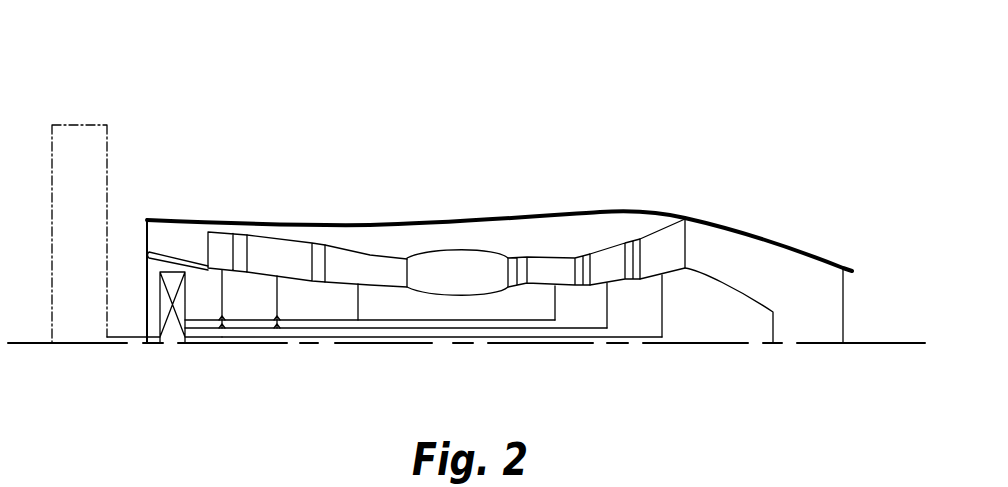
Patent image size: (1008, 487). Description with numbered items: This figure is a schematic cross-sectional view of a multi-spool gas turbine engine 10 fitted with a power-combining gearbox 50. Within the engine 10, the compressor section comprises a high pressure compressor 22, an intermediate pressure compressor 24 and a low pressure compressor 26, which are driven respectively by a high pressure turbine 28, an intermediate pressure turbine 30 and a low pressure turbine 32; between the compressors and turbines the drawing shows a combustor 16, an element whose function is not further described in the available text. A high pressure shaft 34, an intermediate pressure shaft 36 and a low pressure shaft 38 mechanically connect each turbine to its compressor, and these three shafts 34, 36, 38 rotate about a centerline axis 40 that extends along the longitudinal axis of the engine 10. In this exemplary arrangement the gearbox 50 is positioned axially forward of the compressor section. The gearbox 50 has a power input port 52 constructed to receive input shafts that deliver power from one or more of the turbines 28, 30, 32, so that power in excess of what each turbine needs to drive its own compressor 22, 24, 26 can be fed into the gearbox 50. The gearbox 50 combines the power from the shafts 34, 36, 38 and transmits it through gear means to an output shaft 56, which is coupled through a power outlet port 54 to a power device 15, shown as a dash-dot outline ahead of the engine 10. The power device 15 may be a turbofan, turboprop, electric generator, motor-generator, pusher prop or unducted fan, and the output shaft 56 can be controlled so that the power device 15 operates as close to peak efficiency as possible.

The gas turbine engine 10 is at (453, 152).
The power device 15 is at (80, 156).
The combustor 16 is at (450, 265).
The high pressure compressor 22 is at (367, 263).
The intermediate pressure compressor 24 is at (282, 252).
The low pressure compressor 26 is at (225, 243).
The high pressure turbine 28 is at (555, 267).
The intermediate pressure turbine 30 is at (605, 258).
The low pressure turbine 32 is at (665, 245).
The high pressure shaft 34 is at (520, 321).
The intermediate pressure shaft 36 is at (432, 329).
The low pressure shaft 38 is at (330, 338).
The centerline axis 40 is at (866, 344).
The gearbox 50 is at (173, 326).
The power input port 52 is at (187, 338).
The power outlet port 54 is at (143, 344).
The output shaft 56 is at (127, 344).